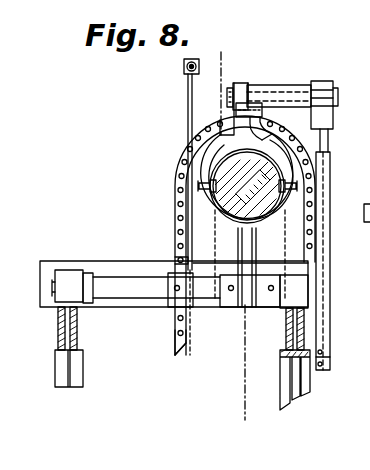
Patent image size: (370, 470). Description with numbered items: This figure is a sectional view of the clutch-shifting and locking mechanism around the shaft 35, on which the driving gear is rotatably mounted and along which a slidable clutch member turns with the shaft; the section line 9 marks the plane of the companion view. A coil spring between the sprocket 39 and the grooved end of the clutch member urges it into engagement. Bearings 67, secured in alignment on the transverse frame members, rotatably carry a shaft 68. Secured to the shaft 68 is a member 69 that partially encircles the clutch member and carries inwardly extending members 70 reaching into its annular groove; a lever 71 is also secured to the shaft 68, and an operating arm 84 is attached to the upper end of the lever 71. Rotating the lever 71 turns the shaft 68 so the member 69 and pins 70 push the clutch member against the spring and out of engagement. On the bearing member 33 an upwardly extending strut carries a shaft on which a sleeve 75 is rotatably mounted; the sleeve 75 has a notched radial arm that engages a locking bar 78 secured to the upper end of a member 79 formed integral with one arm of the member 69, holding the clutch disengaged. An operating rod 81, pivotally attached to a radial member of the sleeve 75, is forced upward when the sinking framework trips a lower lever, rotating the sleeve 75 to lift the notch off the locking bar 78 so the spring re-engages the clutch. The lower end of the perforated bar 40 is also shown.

The section line 9- 9 is at (221, 52).
The bearing member 33 is at (368, 200).
The shaft 35 is at (250, 182).
The sprocket 39 is at (174, 229).
The lower end of bar 40 is at (178, 345).
The bearings 67 is at (65, 272).
The shaft 68 is at (118, 292).
The member 69 is at (230, 298).
The inwardly extending members 70 is at (176, 202).
The lever 71 is at (188, 90).
The sleeve 75 is at (287, 86).
The locking bar 78 is at (232, 107).
The member 79 is at (270, 128).
The operating rod 81 is at (328, 142).
The operating arm 84 is at (194, 59).